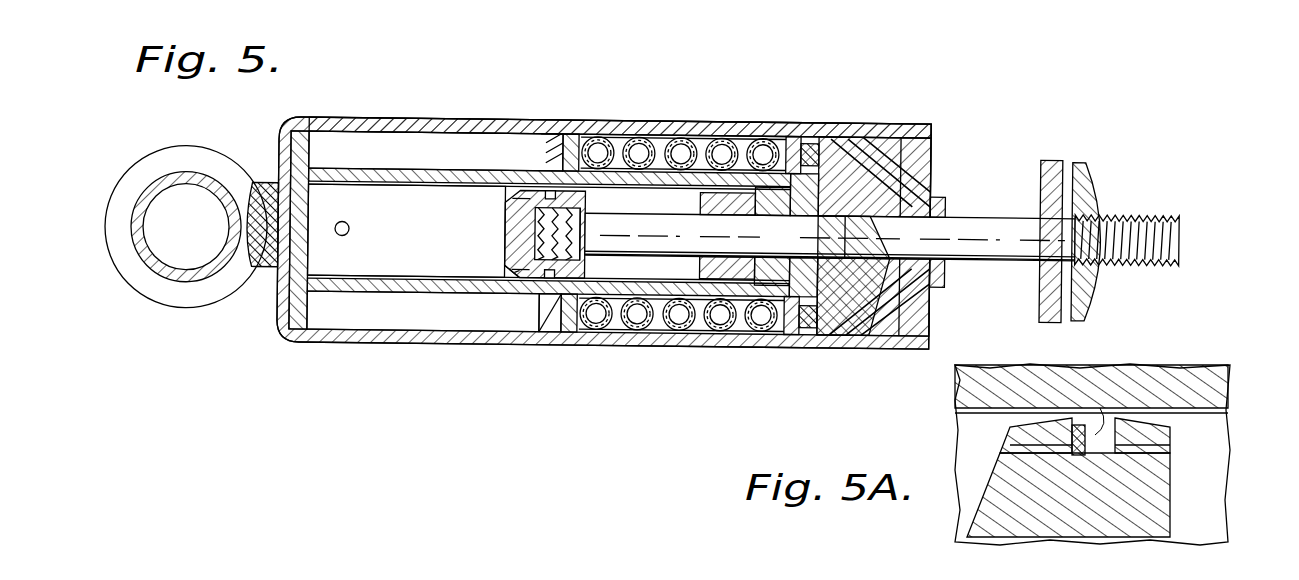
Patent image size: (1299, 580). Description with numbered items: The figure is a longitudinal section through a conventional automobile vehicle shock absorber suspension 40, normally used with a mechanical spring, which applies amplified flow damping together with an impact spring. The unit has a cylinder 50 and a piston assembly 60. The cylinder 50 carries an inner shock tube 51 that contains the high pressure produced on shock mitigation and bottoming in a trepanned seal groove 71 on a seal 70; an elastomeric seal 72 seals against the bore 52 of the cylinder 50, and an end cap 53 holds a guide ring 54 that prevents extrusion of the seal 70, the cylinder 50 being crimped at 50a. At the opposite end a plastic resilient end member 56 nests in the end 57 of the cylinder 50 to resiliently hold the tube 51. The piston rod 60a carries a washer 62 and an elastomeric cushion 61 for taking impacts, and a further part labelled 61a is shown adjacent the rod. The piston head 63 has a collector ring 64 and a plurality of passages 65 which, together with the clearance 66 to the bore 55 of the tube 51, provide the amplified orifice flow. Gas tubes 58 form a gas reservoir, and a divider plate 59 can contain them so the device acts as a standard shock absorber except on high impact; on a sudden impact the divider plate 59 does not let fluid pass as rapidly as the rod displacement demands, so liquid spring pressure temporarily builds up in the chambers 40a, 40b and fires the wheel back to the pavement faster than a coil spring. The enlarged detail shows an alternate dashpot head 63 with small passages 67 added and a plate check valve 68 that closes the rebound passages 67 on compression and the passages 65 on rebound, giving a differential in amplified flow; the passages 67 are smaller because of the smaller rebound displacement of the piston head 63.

In FIG. 5, the vehicle shock absorber suspension 40 is at (731, 71).
In FIG. 5, the liquid chamber 40a is at (328, 197).
In FIG. 5, the liquid chamber 40b is at (375, 145).
In FIG. 5, the cylinder 50 is at (417, 120).
In FIG. 5, the crimp 50a is at (922, 127).
In FIG. 5, the inner shock tube 51 is at (425, 170).
In FIG. 5A, the inner shock tube 51 is at (1215, 383).
In FIG. 5, the bore of cylinder 52 is at (500, 120).
In FIG. 5, the end cap 53 is at (955, 160).
In FIG. 5, the guide ring 54 is at (933, 290).
In FIG. 5, the bore of tube 55 is at (440, 184).
In FIG. 5A, the bore of tube 55 is at (1215, 413).
In FIG. 5, the plastic resilient end member 56 is at (293, 255).
In FIG. 5, the end of cylinder 57 is at (282, 310).
In FIG. 5, the gas tubes 58 is at (682, 322).
In FIG. 5, the divider plate 59 is at (566, 322).
In FIG. 5, the piston assembly 60 is at (1000, 199).
In FIG. 5, the piston rod 60a is at (1015, 256).
In FIG. 5, the elastomeric cushion 61 is at (1055, 160).
In FIG. 5, the rod guide bushing 61a is at (727, 275).
In FIG. 5, the washer 62 is at (1090, 183).
In FIG. 5, the piston head 63 is at (510, 232).
In FIG. 5A, the piston head 63 is at (1160, 525).
In FIG. 5, the collector ring 64 is at (558, 280).
In FIG. 5, the passages 65 is at (515, 265).
In FIG. 5A, the passages 65 is at (1010, 446).
In FIG. 5, the clearance 66 is at (533, 282).
In FIG. 5A, the small passages 67 is at (1145, 455).
In FIG. 5A, the plate check valve 68 is at (1142, 366).
In FIG. 5, the seal 70 is at (842, 312).
In FIG. 5, the trepanned seal groove 71 is at (835, 137).
In FIG. 5, the elastomeric seal 72 is at (811, 137).